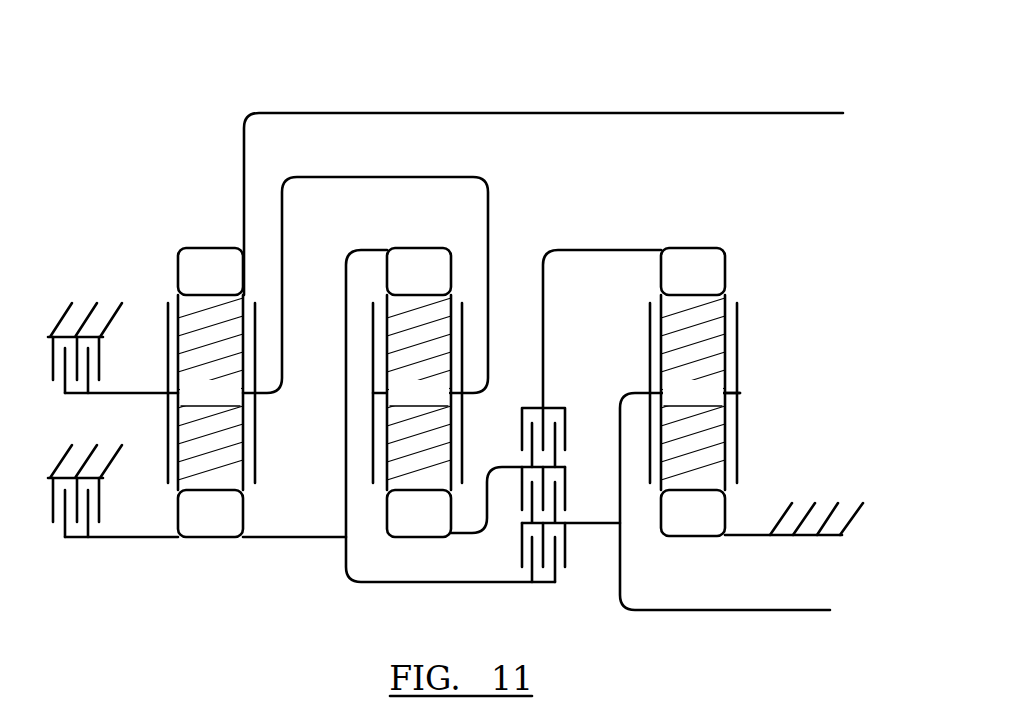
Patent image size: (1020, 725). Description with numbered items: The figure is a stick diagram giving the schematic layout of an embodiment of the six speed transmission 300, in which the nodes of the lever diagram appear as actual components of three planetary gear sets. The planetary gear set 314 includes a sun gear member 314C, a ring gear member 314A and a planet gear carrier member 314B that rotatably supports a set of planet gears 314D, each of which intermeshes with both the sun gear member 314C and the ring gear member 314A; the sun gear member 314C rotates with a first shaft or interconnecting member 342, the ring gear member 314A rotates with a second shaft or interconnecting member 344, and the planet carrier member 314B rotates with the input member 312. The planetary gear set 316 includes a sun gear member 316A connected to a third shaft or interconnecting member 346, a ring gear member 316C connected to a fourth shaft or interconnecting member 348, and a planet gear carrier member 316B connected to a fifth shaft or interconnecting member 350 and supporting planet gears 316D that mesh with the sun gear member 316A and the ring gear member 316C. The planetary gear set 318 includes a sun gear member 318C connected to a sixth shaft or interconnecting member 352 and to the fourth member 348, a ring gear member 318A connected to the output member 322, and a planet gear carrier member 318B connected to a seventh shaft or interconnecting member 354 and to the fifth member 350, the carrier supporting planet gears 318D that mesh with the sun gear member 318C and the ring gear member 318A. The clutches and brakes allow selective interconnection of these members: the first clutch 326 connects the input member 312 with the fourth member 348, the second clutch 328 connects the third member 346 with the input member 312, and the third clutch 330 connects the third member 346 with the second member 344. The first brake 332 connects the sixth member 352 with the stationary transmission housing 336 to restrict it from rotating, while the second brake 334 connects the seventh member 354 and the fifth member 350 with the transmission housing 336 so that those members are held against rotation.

The six speed transmission 300 is at (816, 50).
The input member 312 is at (830, 612).
The planetary gear set 314 is at (729, 424).
The ring gear member 314A is at (695, 268).
The planet gear carrier member 314B is at (739, 338).
The sun gear member 314C is at (700, 513).
The planet gears 314D is at (700, 392).
The planetary gear set 316 is at (484, 417).
The sun gear member 316A is at (428, 515).
The planet gear carrier member 316B is at (463, 347).
The ring gear member 316C is at (422, 268).
The planet gears 316D is at (412, 392).
The planetary gear set 318 is at (242, 417).
The ring gear member 318A is at (207, 270).
The planet gear carrier member 318B is at (258, 430).
The sun gear member 318C is at (215, 517).
The planet gears 318D is at (210, 392).
The output member 322 is at (822, 114).
The first clutch 326 is at (565, 550).
The second clutch 328 is at (567, 487).
The third clutch 330 is at (568, 422).
The first brake 332 is at (55, 507).
The second brake 334 is at (100, 353).
The transmission housing 336 is at (63, 313).
The first shaft or interconnecting member 342 is at (753, 538).
The second shaft or interconnecting member 344 is at (612, 249).
The third shaft or interconnecting member 346 is at (487, 507).
The fourth shaft or interconnecting member 348 is at (295, 538).
The fifth shaft or interconnecting member 350 is at (345, 176).
The sixth shaft or interconnecting member 352 is at (118, 538).
The seventh shaft or interconnecting member 354 is at (153, 396).